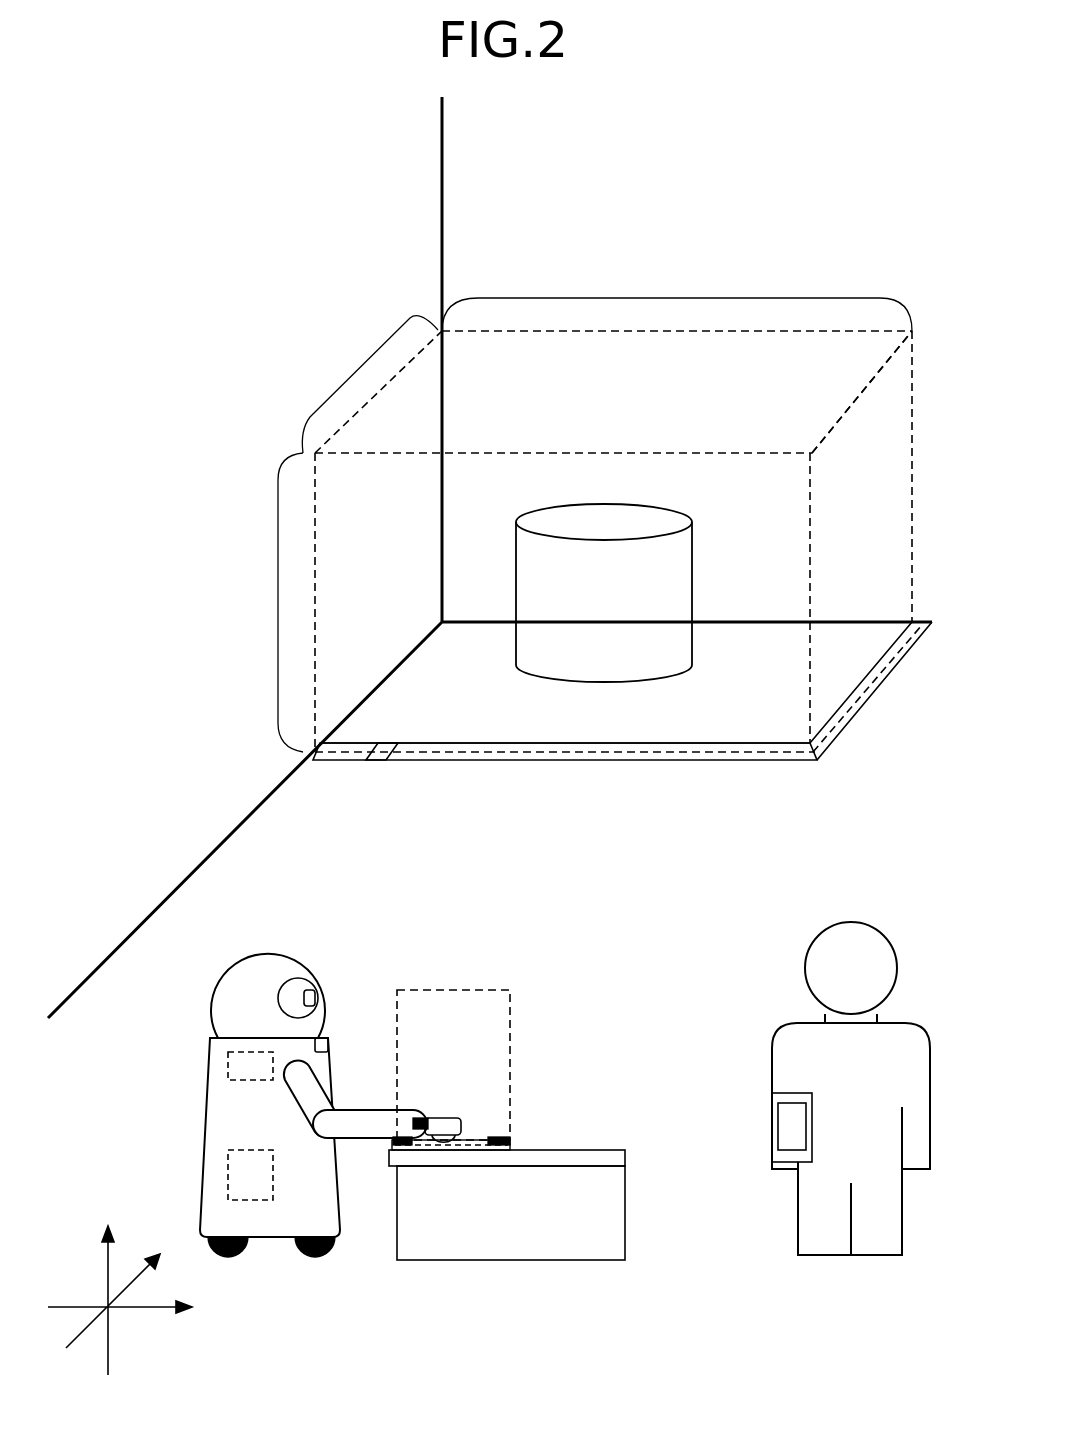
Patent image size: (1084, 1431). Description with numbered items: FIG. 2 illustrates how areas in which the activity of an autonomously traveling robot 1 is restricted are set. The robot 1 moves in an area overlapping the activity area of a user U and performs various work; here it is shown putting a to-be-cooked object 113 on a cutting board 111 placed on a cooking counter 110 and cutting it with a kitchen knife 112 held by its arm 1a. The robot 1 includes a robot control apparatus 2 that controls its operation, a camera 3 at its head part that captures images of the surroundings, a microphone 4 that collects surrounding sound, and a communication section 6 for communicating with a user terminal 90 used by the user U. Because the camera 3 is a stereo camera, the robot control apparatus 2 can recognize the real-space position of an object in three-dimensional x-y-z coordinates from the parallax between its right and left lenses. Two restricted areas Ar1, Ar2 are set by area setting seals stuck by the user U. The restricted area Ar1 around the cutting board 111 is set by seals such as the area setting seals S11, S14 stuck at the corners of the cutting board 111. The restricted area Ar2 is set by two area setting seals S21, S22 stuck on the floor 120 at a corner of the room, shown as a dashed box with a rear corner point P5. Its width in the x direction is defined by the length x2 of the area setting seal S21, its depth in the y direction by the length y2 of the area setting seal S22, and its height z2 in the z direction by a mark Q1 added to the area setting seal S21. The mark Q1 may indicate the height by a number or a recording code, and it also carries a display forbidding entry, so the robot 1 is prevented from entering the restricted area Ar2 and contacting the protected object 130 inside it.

The robot 1 is at (268, 955).
The arm 1a is at (366, 1138).
The robot control apparatus 2 is at (489, 1112).
The camera 3 is at (313, 985).
The microphone 4 is at (328, 1040).
The communication section 6 is at (226, 1062).
The user terminal 90 is at (793, 1100).
The cooking counter 110 is at (605, 1150).
The cutting board 111 is at (485, 1150).
The kitchen knife 112 is at (445, 1118).
The to-be-cooked object 113 is at (455, 1136).
The floor area 120 is at (560, 710).
The protected object 130 is at (612, 500).
The restricted area Ar1 is at (462, 990).
The restricted area Ar2 is at (578, 330).
The point P5 is at (850, 392).
The mark Q1 is at (385, 745).
The area setting seal S11 is at (412, 1143).
The area setting seal S14 is at (498, 1138).
The area setting seal S21 is at (645, 757).
The area setting seal S22 is at (857, 697).
The user U is at (845, 925).
The length x2 is at (680, 298).
The length y2 is at (358, 368).
The height z2 is at (278, 603).